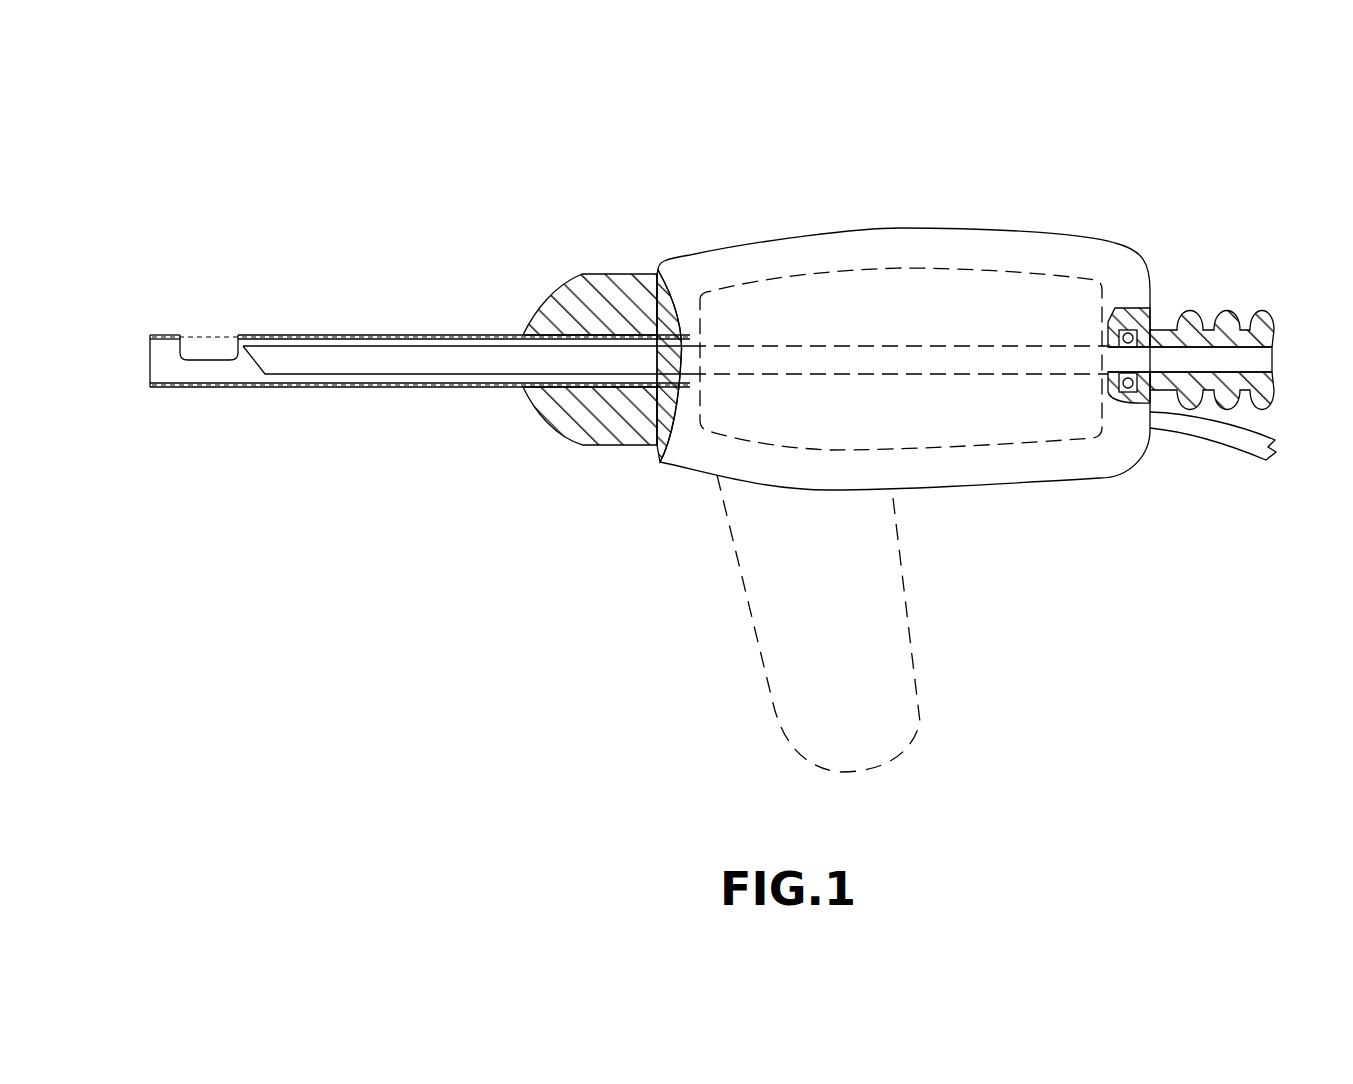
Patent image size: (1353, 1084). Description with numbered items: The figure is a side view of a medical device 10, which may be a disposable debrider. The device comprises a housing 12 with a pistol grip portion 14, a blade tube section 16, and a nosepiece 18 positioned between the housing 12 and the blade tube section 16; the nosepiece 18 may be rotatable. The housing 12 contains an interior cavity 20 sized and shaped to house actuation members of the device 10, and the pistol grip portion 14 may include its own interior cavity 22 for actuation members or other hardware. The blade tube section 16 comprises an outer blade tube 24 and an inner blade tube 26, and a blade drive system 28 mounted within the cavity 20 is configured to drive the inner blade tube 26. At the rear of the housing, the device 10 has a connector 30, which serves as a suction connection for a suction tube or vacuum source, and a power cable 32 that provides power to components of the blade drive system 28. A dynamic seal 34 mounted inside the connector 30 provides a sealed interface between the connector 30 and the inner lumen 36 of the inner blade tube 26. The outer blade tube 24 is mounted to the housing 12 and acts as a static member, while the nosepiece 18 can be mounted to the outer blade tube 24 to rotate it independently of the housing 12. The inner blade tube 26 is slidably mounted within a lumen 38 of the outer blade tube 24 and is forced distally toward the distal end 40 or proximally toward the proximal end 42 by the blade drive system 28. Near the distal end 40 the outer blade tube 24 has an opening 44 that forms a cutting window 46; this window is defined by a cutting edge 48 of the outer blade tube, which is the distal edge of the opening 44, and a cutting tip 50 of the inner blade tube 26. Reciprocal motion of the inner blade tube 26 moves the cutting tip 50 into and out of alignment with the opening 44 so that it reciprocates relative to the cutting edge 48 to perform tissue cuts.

The medical device 10 is at (384, 186).
The housing 12 is at (745, 242).
The pistol grip portion 14 is at (896, 741).
The blade tube section 16 is at (471, 300).
The nosepiece 18 is at (618, 447).
The interior cavity 20 is at (966, 436).
The interior cavity 22 is at (795, 697).
The outer blade tube 24 is at (350, 334).
The inner blade tube 26 is at (397, 361).
The blade drive system 28 is at (945, 300).
The connector 30 is at (1263, 317).
The power cable 32 is at (1223, 437).
The dynamic seal 34 is at (1127, 334).
The inner lumen 36 is at (1032, 365).
The lumen 38 is at (254, 376).
The distal end 40 is at (149, 358).
The proximal end 42 is at (1151, 301).
The opening 44 is at (189, 361).
The cutting window 46 is at (217, 322).
The cutting edge 48 is at (181, 336).
The cutting tip 50 is at (253, 364).